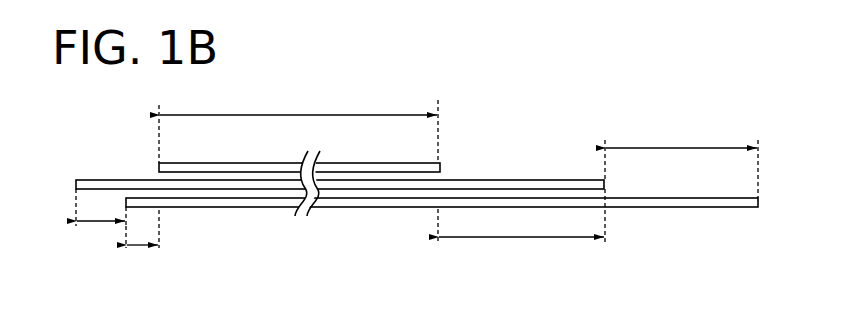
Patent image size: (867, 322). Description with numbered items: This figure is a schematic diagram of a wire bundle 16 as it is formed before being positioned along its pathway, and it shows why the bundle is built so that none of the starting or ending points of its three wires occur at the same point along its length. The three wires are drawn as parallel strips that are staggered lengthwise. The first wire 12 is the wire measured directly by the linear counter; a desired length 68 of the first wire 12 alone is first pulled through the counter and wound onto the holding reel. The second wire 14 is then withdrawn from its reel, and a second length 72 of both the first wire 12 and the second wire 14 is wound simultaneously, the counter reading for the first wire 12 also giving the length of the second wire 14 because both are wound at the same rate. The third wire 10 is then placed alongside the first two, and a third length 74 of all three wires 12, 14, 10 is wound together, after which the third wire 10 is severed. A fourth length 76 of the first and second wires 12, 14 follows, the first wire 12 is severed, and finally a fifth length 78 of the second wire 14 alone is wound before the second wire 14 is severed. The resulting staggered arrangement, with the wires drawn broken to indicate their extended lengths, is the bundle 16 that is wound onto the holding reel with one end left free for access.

The third wire 10 is at (184, 163).
The first wire 12 is at (116, 180).
The second wire 14 is at (184, 208).
The bundle 16 is at (412, 147).
The desired length 68 is at (100, 222).
The second length 72 is at (145, 248).
The third length 74 is at (308, 114).
The fourth length 76 is at (495, 238).
The fifth length 78 is at (672, 148).